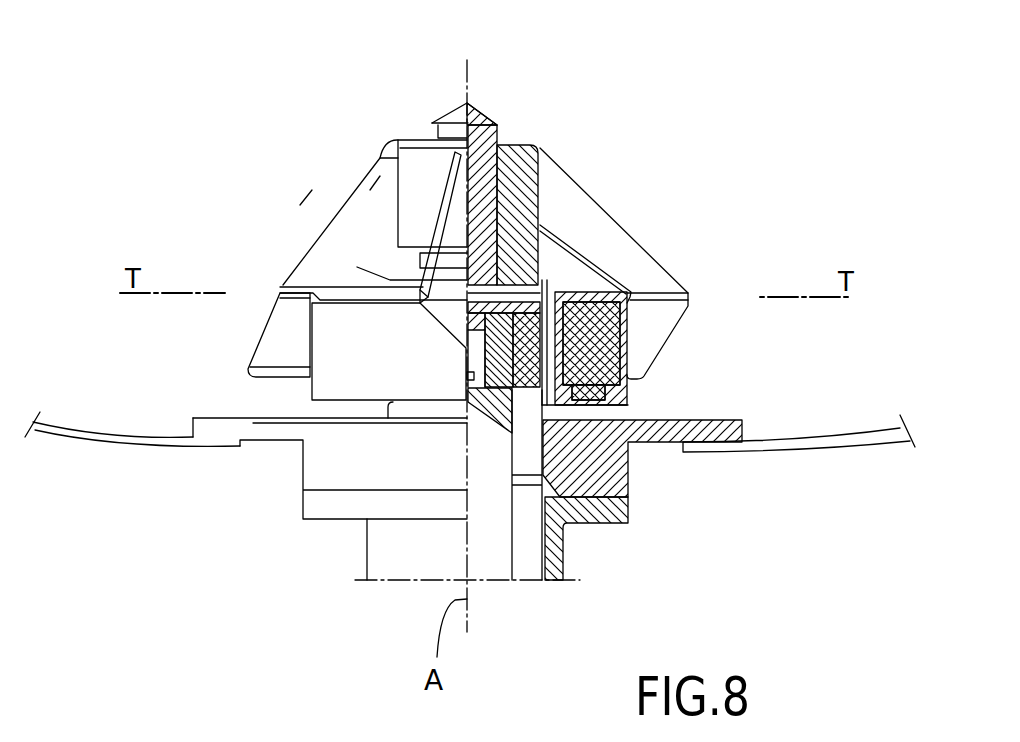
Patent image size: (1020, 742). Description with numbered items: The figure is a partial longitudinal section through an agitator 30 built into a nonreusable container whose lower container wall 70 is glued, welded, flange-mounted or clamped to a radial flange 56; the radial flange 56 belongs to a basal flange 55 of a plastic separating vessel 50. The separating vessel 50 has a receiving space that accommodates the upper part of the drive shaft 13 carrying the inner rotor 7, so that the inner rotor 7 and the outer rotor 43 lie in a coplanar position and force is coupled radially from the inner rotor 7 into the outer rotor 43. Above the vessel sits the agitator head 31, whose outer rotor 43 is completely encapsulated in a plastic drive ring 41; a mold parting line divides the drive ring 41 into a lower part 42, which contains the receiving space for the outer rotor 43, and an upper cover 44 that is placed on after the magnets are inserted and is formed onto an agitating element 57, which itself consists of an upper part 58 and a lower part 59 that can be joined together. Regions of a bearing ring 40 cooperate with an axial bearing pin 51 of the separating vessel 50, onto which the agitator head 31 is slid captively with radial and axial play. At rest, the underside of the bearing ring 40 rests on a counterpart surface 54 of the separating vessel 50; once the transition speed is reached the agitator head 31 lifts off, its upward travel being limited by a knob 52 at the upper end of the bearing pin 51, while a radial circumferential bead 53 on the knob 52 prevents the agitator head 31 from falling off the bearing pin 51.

The inner rotor 7 is at (470, 372).
The drive shaft 13 is at (502, 550).
The agitator 30 is at (177, 69).
The agitator head 31 is at (158, 166).
The bearing ring 40 is at (393, 147).
The drive ring 41 is at (630, 327).
The lower part of the drive ring 42 is at (370, 360).
The outer rotor 43 is at (587, 348).
The upper cover 44 is at (357, 283).
The separating vessel 50 is at (547, 263).
The bearing pin 51 is at (490, 123).
The knob 52 is at (480, 107).
The circumferential bead 53 is at (503, 128).
The counterpart surface 54 is at (622, 272).
The basal flange 55 is at (633, 482).
The radial flange 56 is at (692, 427).
The agitating element 57 is at (308, 200).
The upper part 58 is at (370, 192).
The lower part 59 is at (277, 333).
The container wall 70 is at (75, 432).